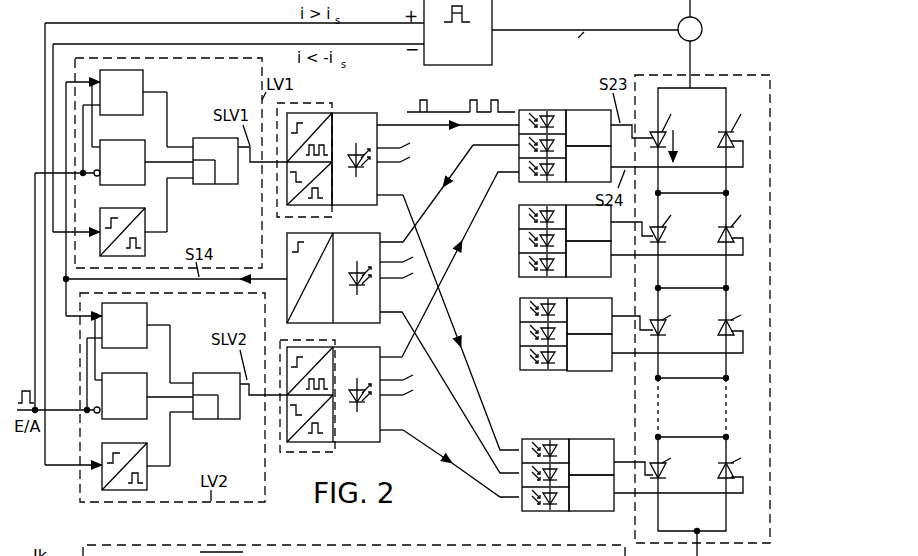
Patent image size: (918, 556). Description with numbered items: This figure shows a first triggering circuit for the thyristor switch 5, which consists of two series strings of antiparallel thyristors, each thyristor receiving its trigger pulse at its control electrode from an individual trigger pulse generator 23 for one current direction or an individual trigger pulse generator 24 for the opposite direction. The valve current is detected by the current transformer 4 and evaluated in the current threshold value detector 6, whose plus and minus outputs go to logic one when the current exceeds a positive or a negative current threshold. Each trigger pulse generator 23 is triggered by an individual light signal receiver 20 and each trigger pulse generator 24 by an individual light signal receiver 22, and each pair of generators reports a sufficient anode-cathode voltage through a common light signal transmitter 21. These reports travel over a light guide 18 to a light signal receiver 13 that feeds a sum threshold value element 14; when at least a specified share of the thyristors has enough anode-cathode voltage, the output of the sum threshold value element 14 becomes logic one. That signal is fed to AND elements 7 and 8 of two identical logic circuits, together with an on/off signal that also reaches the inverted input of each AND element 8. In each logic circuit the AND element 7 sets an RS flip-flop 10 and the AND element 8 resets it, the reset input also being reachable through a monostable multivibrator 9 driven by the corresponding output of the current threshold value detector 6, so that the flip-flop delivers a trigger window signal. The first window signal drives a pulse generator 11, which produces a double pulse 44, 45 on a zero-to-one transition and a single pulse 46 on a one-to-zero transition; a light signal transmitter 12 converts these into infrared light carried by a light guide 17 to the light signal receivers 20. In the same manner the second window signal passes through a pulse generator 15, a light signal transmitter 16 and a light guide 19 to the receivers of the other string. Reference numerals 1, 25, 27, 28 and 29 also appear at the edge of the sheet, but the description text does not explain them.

The load connection 1 is at (698, 547).
The current transformer 4 is at (702, 29).
The thyristor switch 5 is at (708, 74).
The current threshold value detector 6 is at (494, 12).
The AND element 7 is at (143, 83).
The AND element 8 is at (145, 142).
The monostable multivibrator 9 is at (145, 213).
The RS flip-flop 10 is at (197, 138).
The pulse generator 11 is at (296, 104).
The light signal transmitter 12 is at (355, 113).
The light signal receiver 13 is at (370, 233).
The sum threshold value element 14 is at (287, 244).
The pulse generator 15 is at (303, 452).
The light signal transmitter 16 is at (367, 443).
The light guide 17 is at (388, 124).
The light guide 18 is at (459, 163).
The light guide 19 is at (474, 215).
The light signal receiver 20 is at (556, 114).
The light signal transmitter 21 is at (560, 145).
The light signal receiver 22 is at (559, 178).
The trigger pulse generator 23 is at (609, 292).
The trigger pulse generator 24 is at (654, 326).
The circuit block 25 is at (271, 552).
The circuit block 27 is at (389, 553).
The circuit block 28 is at (474, 553).
The circuit block 29 is at (562, 553).
The double pulse 44 is at (496, 100).
The double pulse 45 is at (473, 100).
The single pulse 46 is at (424, 100).